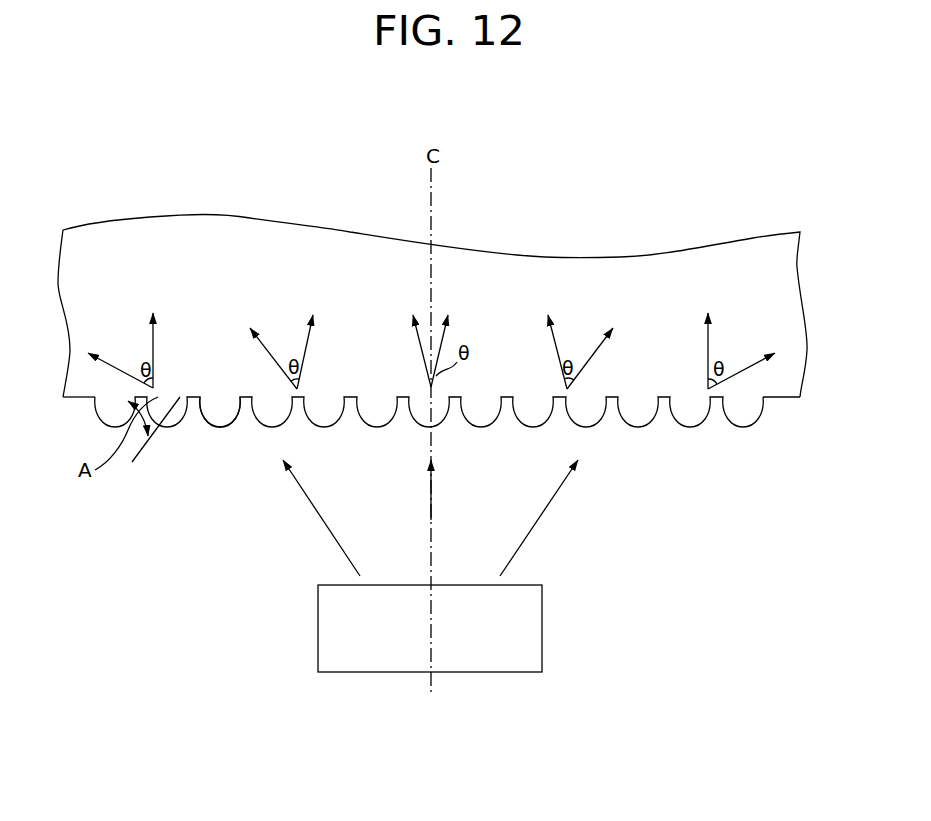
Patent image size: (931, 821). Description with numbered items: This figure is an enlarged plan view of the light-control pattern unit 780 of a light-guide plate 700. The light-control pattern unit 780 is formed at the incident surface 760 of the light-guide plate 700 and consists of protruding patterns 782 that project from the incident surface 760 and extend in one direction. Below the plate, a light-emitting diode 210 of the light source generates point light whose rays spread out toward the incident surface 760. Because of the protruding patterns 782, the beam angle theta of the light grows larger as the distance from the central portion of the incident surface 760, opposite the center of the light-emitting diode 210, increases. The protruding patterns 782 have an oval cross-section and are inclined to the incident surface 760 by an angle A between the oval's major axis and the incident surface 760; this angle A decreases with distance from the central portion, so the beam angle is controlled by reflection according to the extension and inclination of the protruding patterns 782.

The light-guide plate 700 is at (303, 192).
The light-control pattern unit 780 is at (489, 384).
The protruding patterns 782 is at (218, 428).
The incident surface 760 is at (772, 399).
The light-emitting diode 210 is at (537, 635).